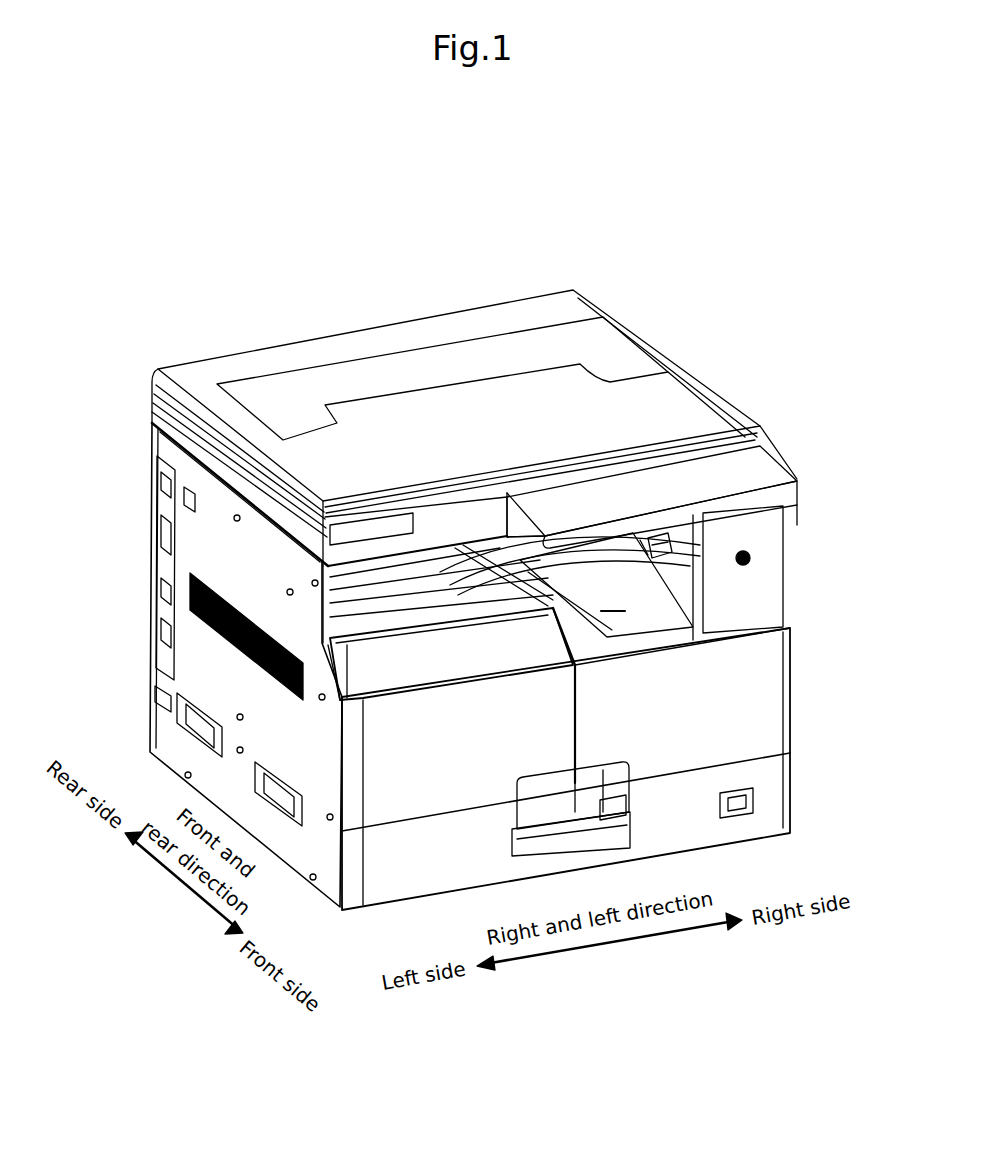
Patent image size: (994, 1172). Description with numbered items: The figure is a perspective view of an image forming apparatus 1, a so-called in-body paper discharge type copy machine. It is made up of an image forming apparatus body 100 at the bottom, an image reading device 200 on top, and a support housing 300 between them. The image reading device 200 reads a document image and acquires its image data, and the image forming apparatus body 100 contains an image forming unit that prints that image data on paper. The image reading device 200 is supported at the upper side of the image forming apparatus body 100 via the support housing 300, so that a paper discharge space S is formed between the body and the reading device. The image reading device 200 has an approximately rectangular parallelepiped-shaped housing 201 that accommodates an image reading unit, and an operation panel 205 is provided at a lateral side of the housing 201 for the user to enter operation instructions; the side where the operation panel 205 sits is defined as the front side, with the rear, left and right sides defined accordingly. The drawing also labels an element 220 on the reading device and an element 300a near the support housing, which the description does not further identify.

The image forming apparatus 1 is at (145, 302).
The image forming apparatus body 100 is at (758, 727).
The image reading device 200 is at (148, 416).
The housing 201 is at (182, 440).
The operation panel 205 is at (752, 480).
The document cover 220 is at (350, 372).
The support housing 300 is at (760, 585).
The discharge port 300a is at (656, 548).